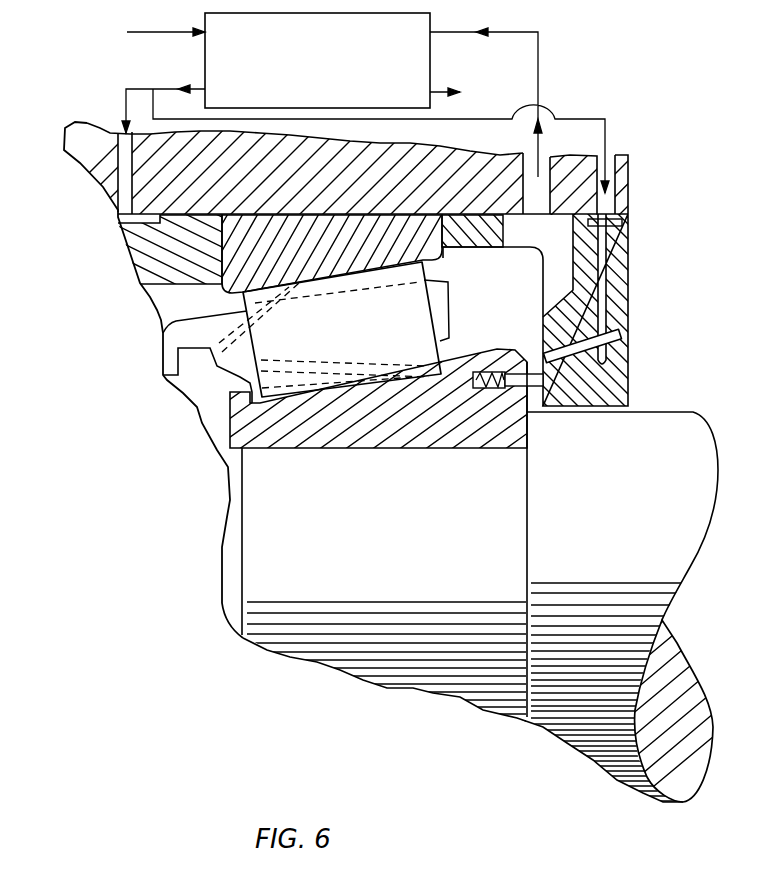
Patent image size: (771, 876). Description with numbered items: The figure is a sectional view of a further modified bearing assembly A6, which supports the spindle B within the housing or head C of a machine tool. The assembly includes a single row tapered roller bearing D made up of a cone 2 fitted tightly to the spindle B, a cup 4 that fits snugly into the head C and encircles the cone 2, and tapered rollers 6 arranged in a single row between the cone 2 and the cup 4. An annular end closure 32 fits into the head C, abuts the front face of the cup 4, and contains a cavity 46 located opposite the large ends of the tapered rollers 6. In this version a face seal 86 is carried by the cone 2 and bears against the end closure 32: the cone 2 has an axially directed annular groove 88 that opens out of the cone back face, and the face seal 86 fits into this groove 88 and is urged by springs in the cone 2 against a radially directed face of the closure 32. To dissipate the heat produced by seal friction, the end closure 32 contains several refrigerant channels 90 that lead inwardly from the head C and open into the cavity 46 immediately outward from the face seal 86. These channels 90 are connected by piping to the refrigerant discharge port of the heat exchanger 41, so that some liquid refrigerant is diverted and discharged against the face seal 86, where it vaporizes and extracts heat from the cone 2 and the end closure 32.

The heat exchanger 41 is at (307, 78).
The cup 4 is at (280, 230).
The end closure 32 is at (620, 276).
The cavity 46 is at (502, 306).
The tapered rollers 6 is at (384, 342).
The refrigerant channels 90 is at (585, 323).
The face seal 86 is at (512, 398).
The annular groove 88 is at (492, 389).
The cone 2 is at (353, 428).
The head C is at (108, 128).
The spindle B is at (480, 584).
The tapered roller bearing D is at (388, 455).
The modified bearing assembly A6 is at (186, 461).